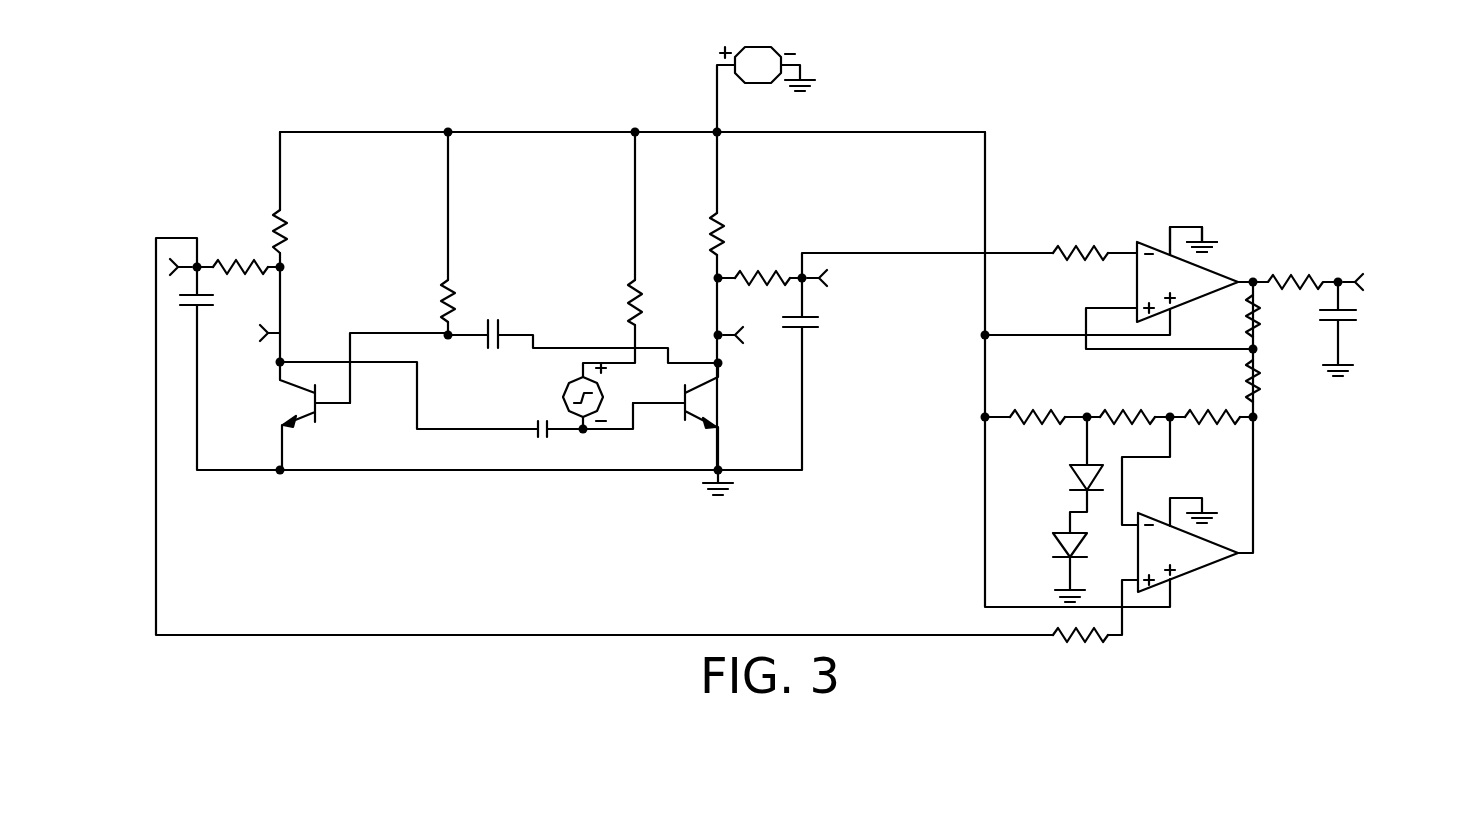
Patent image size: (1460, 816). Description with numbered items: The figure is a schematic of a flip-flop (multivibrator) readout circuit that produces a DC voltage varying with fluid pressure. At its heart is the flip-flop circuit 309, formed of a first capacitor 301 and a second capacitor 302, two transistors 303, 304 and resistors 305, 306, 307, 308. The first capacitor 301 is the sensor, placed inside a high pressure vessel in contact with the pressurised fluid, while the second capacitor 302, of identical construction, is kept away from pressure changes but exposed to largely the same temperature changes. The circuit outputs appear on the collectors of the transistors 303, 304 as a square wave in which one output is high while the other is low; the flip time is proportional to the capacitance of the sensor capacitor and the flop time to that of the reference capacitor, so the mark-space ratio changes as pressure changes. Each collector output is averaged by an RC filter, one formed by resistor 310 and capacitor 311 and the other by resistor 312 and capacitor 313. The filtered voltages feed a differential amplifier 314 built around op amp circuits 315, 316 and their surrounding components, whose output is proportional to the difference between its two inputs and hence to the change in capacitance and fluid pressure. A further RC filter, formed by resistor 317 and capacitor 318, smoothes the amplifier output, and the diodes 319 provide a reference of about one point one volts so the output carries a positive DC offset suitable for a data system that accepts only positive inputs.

The first capacitor 301 is at (490, 317).
The second capacitor 302 is at (542, 418).
The transistor 303 is at (292, 402).
The transistor 304 is at (707, 405).
The resistor 305 is at (290, 229).
The resistor 306 is at (440, 298).
The resistor 307 is at (626, 298).
The resistor 308 is at (715, 214).
The flip-flop circuit 309 is at (515, 118).
The resistor 310 is at (228, 262).
The capacitor 311 is at (180, 300).
The resistor 312 is at (765, 269).
The capacitor 313 is at (822, 322).
The differential amplifier 314 is at (1204, 200).
The op amp circuit 315 is at (1213, 264).
The op amp circuit 316 is at (1200, 569).
The resistor 317 is at (1300, 274).
The capacitor 318 is at (1358, 314).
The diodes 319 is at (1063, 535).